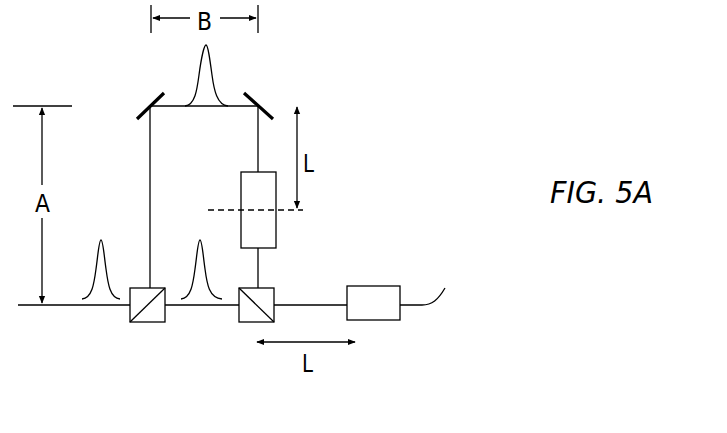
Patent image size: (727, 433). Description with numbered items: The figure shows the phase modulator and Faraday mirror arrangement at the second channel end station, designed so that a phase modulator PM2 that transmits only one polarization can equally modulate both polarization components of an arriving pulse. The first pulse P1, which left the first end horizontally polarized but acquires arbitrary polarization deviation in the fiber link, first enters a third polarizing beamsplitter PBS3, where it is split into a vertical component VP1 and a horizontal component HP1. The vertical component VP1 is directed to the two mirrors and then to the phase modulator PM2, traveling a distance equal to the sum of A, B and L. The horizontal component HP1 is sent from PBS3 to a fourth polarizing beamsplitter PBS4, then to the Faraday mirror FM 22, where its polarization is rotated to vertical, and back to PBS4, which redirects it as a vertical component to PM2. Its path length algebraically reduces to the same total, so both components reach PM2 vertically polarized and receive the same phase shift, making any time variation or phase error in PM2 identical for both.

The Faraday mirror 22 is at (430, 280).
The third polarizing beamsplitter PBS3 is at (148, 323).
The fourth polarizing beamsplitter PBS4 is at (252, 322).
The phase modulator PM2 is at (253, 226).
The Faraday mirror FM is at (373, 303).
The first pulse P1 is at (101, 253).
The horizontal component HP1 is at (214, 269).
The vertical component VP1 is at (218, 75).